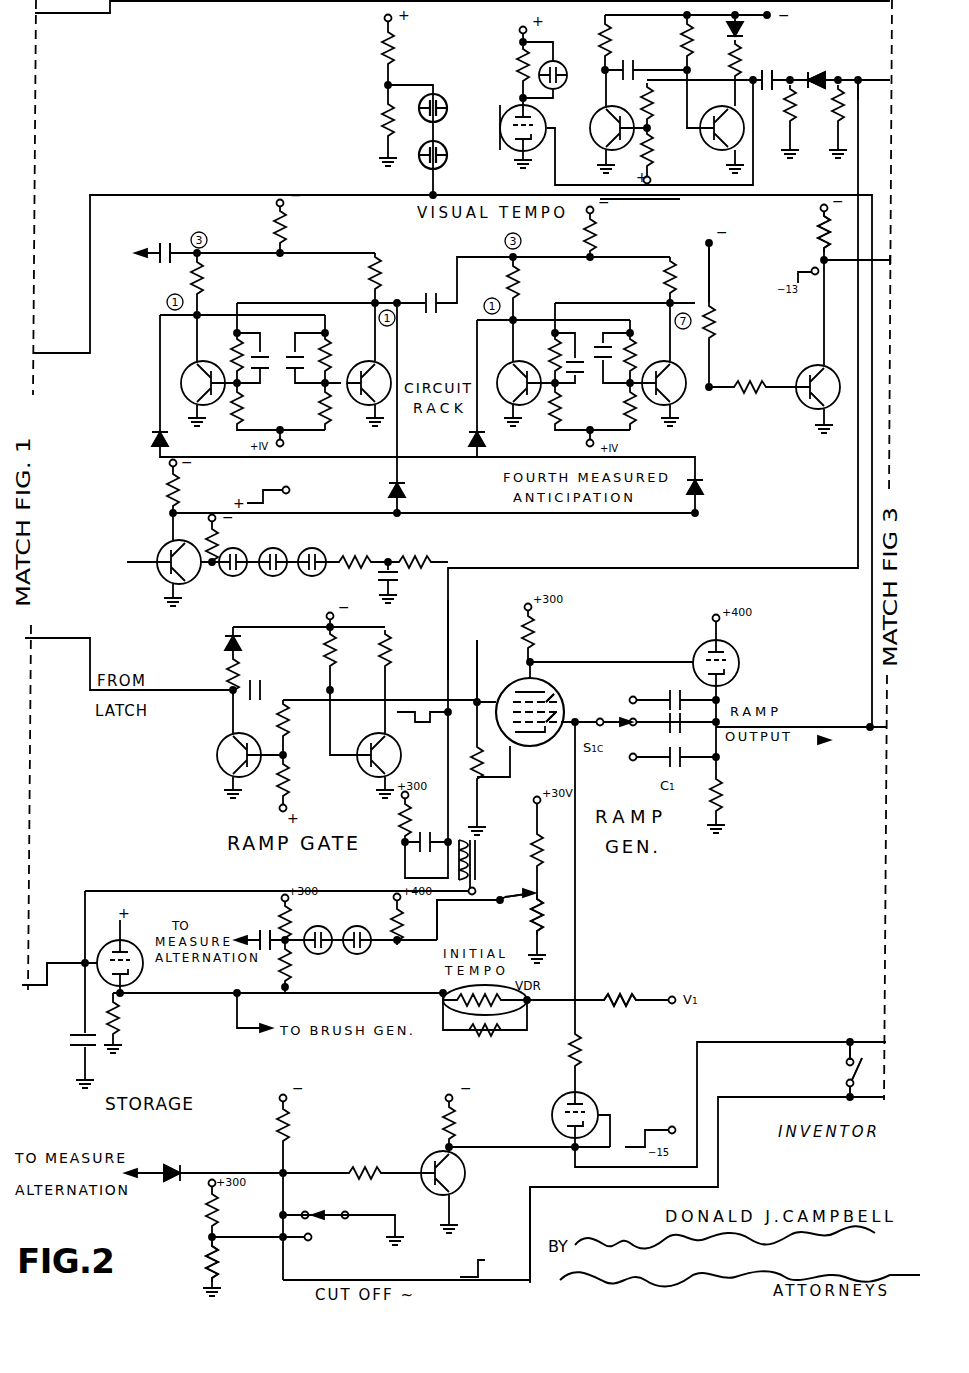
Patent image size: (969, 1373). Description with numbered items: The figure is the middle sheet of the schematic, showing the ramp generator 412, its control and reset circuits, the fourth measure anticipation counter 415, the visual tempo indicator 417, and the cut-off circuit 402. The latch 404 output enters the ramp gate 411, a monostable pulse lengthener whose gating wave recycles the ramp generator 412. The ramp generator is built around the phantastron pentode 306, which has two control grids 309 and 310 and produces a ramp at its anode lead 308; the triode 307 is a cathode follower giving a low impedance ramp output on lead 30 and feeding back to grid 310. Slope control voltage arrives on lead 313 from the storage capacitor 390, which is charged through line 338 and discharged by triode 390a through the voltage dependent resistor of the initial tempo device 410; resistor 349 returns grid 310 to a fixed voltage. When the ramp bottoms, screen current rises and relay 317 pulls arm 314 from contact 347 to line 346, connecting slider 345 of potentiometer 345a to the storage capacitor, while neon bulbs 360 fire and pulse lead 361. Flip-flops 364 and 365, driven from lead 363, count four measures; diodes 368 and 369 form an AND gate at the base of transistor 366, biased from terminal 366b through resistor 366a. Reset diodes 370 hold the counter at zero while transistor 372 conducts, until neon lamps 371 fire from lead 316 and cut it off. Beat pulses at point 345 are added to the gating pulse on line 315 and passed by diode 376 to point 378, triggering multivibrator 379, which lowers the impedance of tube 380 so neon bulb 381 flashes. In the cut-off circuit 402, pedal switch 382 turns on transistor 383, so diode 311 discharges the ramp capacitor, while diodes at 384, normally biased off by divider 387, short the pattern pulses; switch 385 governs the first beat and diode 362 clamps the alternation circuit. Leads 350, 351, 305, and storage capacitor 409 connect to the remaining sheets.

The lead 350 is at (206, 2).
The lead 351 is at (310, 2).
The neon bulb 381 is at (578, 48).
The tube 380 is at (502, 112).
The lead 313 is at (449, 117).
The circuit 417 is at (496, 185).
The point 378 is at (792, 78).
The diode 376 is at (820, 75).
The slider 345 is at (838, 80).
The monostable multivibrator 379 is at (693, 185).
The lead 30 is at (215, 195).
The lead 363 is at (143, 258).
The diode 368 is at (154, 440).
The flip-flop 364 is at (286, 407).
The diode 369 is at (468, 433).
The flip-flop 365 is at (591, 408).
The resistor 366a is at (822, 209).
The terminal 366b is at (712, 246).
The transistor 366 is at (805, 409).
The reset diodes 370 is at (408, 490).
The fourth measured anticipation circuit 415 is at (672, 500).
The transistor 372 is at (150, 567).
The neon lamps 371 is at (302, 577).
The lead 316 is at (448, 640).
The line 315 is at (480, 642).
The phantastron pentode 306 is at (515, 668).
The anode lead 308 is at (590, 652).
The triode 307 is at (740, 662).
The control grid 309 is at (556, 700).
The control grid 310 is at (560, 716).
The lead 305 is at (400, 700).
The latch circuit 404 is at (190, 721).
The ramp gate 411 is at (340, 882).
The relay 317 is at (514, 870).
The ramp generator 412 is at (654, 886).
The potentiometer 345a is at (508, 893).
The line 346 is at (168, 891).
The line 338 is at (63, 962).
The triode 390a is at (128, 940).
The lead 361 is at (252, 940).
The neon bulbs 360 is at (326, 928).
The contact 347 is at (495, 904).
The relay arm 314 is at (533, 910).
The initial tempo device 410 is at (442, 993).
The resistance 349 is at (620, 1003).
The storage capacitor 390 is at (70, 1062).
The storage capacitor 409 is at (224, 1115).
The diode 311 is at (592, 1100).
The cut-off voltage switch 385 is at (848, 1070).
The diode 362 is at (178, 1183).
The bias divider 387 is at (206, 1237).
The pedal switch 382 is at (334, 1219).
The transistor 383 is at (424, 1162).
The connection 384 is at (530, 1213).
The cut-off circuit 402 is at (406, 1292).